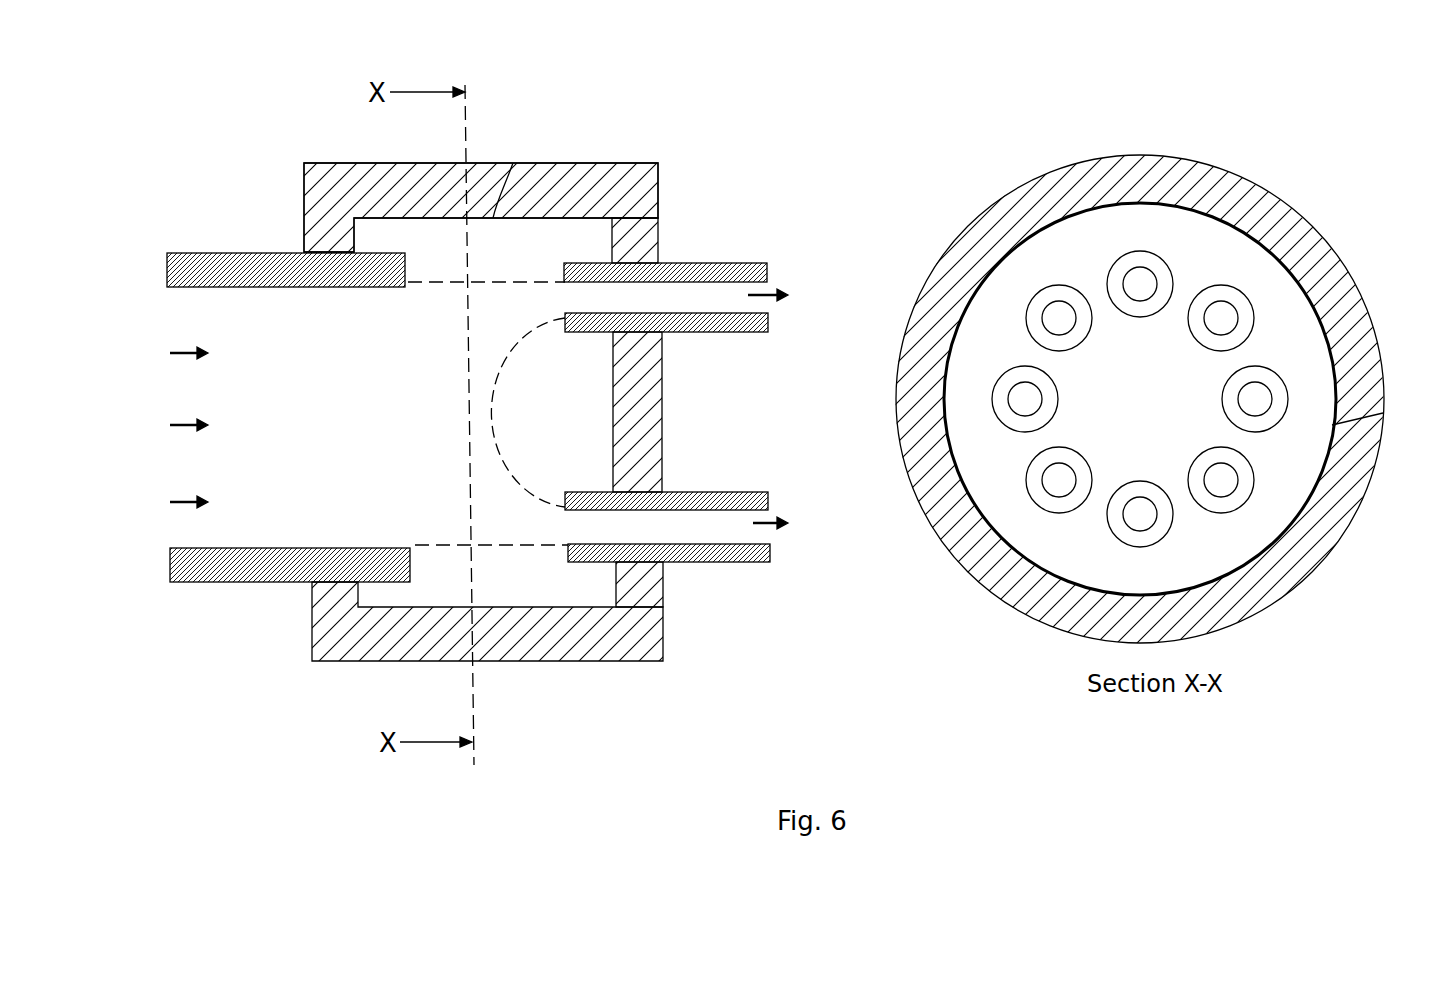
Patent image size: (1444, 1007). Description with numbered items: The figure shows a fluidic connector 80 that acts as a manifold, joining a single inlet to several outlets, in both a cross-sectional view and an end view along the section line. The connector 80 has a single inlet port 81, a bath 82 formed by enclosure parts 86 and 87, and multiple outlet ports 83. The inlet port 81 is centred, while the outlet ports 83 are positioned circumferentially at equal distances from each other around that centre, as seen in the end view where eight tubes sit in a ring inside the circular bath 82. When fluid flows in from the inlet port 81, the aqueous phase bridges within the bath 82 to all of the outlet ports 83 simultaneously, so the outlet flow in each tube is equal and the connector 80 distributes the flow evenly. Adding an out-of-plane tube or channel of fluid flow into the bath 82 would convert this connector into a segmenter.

The connector 80 is at (270, 149).
The inlet port 81 is at (200, 238).
The bath 82 is at (645, 140).
The outlet ports 83 is at (742, 268).
The enclosure part 86 is at (658, 235).
The enclosure part 87 is at (358, 663).